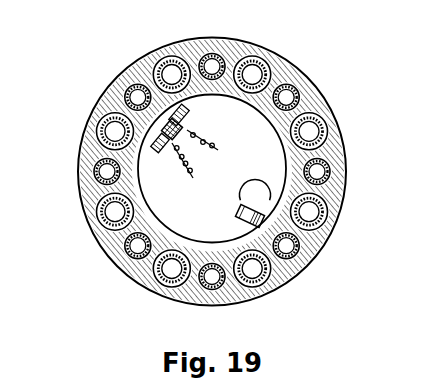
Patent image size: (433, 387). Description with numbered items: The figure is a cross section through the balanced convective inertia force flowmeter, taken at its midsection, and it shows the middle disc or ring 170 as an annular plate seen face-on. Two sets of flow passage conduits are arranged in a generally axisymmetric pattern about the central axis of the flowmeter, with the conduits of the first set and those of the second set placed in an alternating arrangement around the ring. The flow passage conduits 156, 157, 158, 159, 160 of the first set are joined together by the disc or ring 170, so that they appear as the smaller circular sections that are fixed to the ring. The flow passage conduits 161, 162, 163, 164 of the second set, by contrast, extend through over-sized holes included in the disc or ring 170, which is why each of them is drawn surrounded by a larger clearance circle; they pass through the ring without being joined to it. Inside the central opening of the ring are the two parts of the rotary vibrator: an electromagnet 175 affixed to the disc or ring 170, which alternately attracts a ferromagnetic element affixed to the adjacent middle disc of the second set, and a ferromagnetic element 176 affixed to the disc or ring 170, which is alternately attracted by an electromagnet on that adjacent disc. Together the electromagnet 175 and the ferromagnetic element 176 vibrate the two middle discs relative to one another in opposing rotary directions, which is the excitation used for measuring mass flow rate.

The flow passage conduit 156 is at (212, 66).
The flow passage conduit 157 is at (138, 98).
The flow passage conduit 158 is at (106, 171).
The flow passage conduit 159 is at (137, 246).
The flow passage conduit 160 is at (211, 278).
The flow passage conduit 161 is at (173, 74).
The flow passage conduit 162 is at (115, 131).
The flow passage conduit 163 is at (115, 212).
The flow passage conduit 164 is at (172, 268).
The middle disc or ring 170 is at (318, 172).
The electromagnet 175 is at (192, 122).
The ferromagnetic element 176 is at (266, 210).